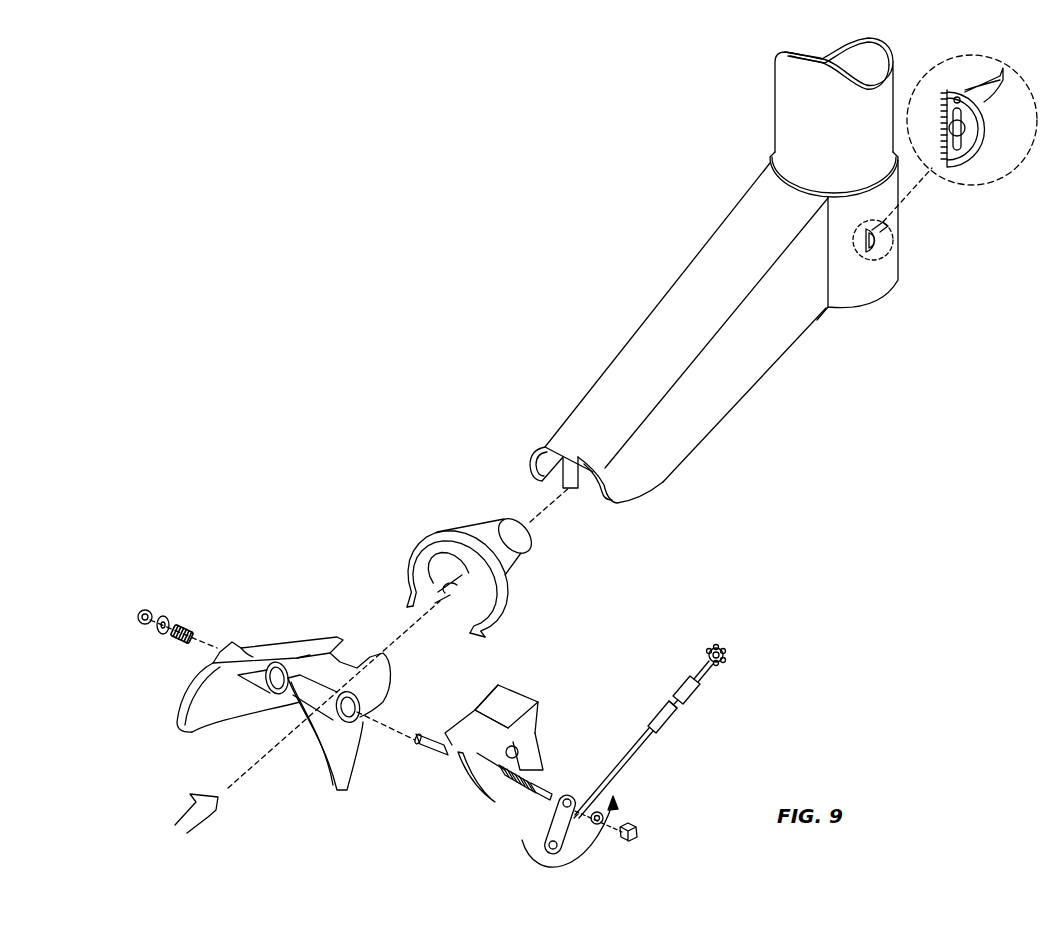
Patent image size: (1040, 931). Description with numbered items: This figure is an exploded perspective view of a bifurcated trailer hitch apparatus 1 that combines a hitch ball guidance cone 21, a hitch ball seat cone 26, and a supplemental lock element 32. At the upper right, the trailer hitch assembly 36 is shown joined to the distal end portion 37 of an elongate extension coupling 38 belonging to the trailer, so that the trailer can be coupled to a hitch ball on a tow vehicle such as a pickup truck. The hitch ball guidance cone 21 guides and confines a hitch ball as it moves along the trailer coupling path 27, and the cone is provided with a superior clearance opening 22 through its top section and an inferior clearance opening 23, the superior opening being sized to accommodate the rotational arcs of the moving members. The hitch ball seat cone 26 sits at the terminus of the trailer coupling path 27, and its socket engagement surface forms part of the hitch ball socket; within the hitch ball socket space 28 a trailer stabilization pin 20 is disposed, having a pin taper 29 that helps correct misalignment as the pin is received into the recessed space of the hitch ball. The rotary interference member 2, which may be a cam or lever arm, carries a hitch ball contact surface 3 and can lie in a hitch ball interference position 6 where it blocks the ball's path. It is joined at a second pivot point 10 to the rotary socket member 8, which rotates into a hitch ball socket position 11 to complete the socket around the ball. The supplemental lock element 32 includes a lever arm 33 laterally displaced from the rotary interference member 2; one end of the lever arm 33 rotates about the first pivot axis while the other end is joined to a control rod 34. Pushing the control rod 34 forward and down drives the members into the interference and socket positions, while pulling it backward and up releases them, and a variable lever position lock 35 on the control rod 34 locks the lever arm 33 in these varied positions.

The bifurcated trailer hitch apparatus 1 is at (417, 830).
The rotary interference member 2 is at (450, 760).
The hitch ball contact surface 3 is at (470, 788).
The hitch ball interference position 6 is at (483, 811).
The rotary socket member 8 is at (507, 707).
The second pivot point 10 is at (530, 747).
The hitch ball socket position 11 is at (543, 760).
The trailer stabilization pin 20 is at (458, 590).
The hitch ball guidance cone 21 is at (207, 715).
The superior clearance opening 22 is at (295, 675).
The inferior clearance opening 23 is at (293, 786).
The hitch ball seat cone 26 is at (448, 540).
The trailer coupling path 27 is at (197, 820).
The hitch ball socket space 28 is at (458, 606).
The pin taper 29 is at (442, 605).
The supplemental lock element 32 is at (686, 745).
The lever arm 33 is at (553, 823).
The control rod 34 is at (628, 748).
The variable lever position lock 35 is at (665, 715).
The trailer hitch assembly 36 is at (313, 538).
The distal end portion 37 is at (555, 428).
The elongate extension coupling 38 is at (745, 397).